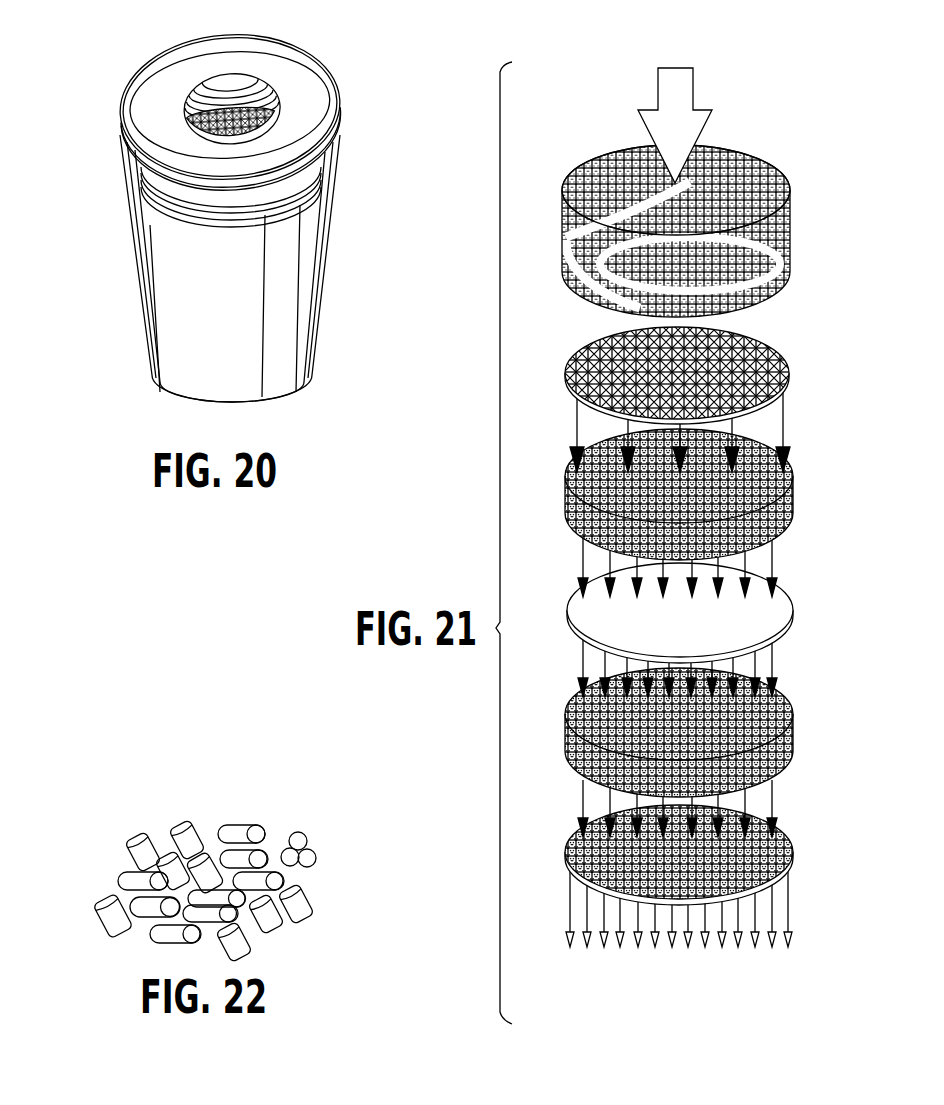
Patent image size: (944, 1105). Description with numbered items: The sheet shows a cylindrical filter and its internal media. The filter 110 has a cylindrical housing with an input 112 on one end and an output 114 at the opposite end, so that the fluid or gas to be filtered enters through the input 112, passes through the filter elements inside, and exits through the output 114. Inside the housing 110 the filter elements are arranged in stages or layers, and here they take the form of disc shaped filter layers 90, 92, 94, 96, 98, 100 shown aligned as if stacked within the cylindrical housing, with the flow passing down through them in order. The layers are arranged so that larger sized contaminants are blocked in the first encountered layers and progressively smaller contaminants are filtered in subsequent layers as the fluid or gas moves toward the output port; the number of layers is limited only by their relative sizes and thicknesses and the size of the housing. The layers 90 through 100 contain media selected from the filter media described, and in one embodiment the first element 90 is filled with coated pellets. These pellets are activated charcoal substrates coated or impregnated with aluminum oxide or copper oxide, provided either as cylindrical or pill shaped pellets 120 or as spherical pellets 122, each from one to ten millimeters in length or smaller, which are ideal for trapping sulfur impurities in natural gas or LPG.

In FIG. 21, the disc shaped filter layer 90 is at (792, 252).
In FIG. 21, the disc shaped filter layer 92 is at (768, 353).
In FIG. 21, the disc shaped filter layer 94 is at (778, 509).
In FIG. 21, the disc shaped filter layer 96 is at (762, 607).
In FIG. 21, the disc shaped filter layer 98 is at (778, 752).
In FIG. 21, the disc shaped filter layer 100 is at (762, 858).
In FIG. 20, the filter housing 110 is at (214, 224).
In FIG. 20, the input port 112 is at (243, 95).
In FIG. 20, the output port 114 is at (190, 393).
In FIG. 22, the cylindrical or pill shaped pellets 120 is at (241, 832).
In FIG. 22, the spherical pellets 122 is at (304, 839).